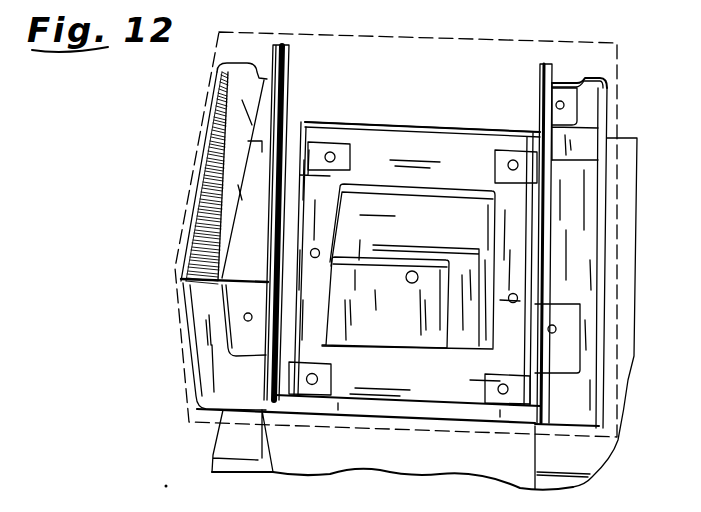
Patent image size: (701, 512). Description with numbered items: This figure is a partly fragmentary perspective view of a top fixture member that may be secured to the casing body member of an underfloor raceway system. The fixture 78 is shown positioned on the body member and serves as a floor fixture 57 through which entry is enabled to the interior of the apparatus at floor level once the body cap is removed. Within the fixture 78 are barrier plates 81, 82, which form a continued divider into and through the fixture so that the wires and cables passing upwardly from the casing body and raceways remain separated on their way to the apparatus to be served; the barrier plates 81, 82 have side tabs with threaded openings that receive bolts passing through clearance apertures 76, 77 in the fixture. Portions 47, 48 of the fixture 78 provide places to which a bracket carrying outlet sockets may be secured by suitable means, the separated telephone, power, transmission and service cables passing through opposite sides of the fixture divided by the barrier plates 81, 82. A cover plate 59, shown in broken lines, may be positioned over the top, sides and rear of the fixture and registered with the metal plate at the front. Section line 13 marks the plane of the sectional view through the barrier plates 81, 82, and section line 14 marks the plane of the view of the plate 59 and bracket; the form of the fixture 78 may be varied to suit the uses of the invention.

The section line 13- 13 is at (284, 252).
The section line 14- 14 is at (88, 392).
The fixture portion 47 is at (247, 333).
The fixture portion 48 is at (560, 351).
The floor fixture 57 is at (433, 160).
The cover plate 59 is at (175, 319).
The clearance aperture 76 is at (320, 250).
The clearance aperture 77 is at (518, 297).
The fixture 78 is at (383, 123).
The barrier plate 81 is at (380, 308).
The barrier plate 82 is at (433, 244).